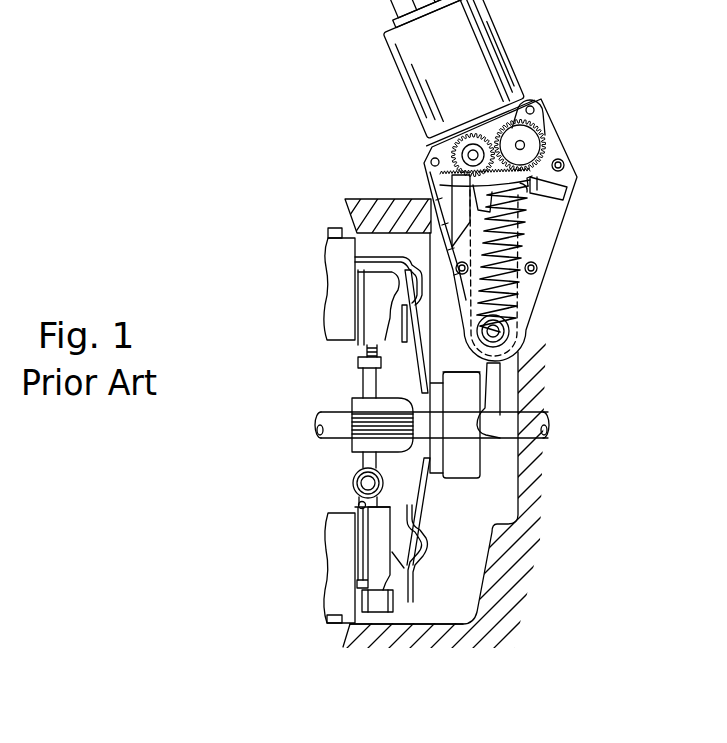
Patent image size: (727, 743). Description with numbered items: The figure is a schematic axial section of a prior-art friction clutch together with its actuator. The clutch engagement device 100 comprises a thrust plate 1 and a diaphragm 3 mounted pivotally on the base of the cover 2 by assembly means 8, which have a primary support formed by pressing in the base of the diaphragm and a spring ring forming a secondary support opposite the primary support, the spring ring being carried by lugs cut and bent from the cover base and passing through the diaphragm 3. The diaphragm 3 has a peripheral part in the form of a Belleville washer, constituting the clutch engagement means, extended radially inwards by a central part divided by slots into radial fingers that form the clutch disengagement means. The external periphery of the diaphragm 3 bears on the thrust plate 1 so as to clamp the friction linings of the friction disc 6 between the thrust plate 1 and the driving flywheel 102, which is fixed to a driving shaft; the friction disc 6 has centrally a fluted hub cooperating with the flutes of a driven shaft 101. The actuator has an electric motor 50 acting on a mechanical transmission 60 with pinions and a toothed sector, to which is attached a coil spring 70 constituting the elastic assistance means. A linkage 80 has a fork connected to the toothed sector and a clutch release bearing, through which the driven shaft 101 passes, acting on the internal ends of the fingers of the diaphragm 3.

The thrust plate 1 is at (384, 284).
The cover 2 is at (422, 602).
The diaphragm 3 is at (420, 498).
The friction disc 6 is at (354, 379).
The assembly means 8 is at (424, 548).
The electric motor 50 is at (466, 48).
The mechanical transmission 60 is at (510, 138).
The coil spring 70 is at (520, 230).
The linkage 80 is at (472, 462).
The clutch engagement device 100 is at (380, 318).
The driven shaft 101 is at (332, 440).
The driving flywheel 102 is at (340, 545).